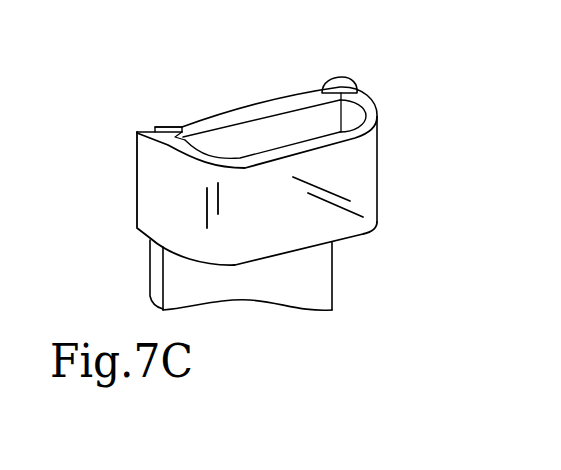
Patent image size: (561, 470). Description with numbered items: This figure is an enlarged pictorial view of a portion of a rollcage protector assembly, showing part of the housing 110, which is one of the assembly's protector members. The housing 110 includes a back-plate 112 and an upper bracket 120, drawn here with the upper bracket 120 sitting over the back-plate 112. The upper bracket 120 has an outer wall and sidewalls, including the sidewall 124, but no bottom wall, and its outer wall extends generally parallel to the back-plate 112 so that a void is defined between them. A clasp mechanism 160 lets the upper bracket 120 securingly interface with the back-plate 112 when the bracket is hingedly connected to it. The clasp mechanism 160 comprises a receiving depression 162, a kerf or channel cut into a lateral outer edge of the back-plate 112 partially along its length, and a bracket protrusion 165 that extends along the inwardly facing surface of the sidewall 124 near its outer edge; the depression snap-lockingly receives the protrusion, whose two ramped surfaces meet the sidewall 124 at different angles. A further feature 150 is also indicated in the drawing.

The housing 110 is at (140, 276).
The back-plate 112 is at (312, 278).
The upper bracket 120 is at (358, 171).
The sidewall 124 is at (152, 196).
The latch knob 150 is at (356, 72).
The clasp mechanism 160 is at (266, 100).
The receiving depression 162 is at (180, 127).
The bracket protrusion 165 is at (162, 126).